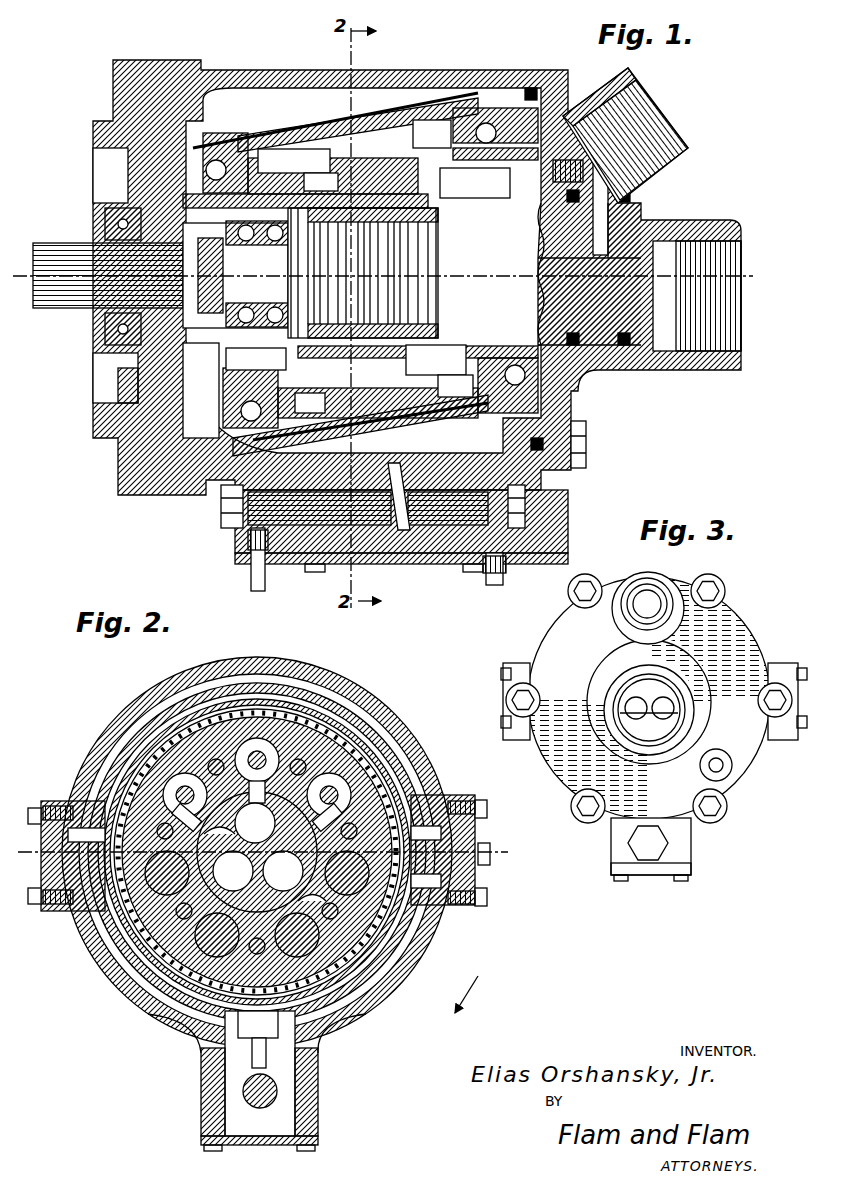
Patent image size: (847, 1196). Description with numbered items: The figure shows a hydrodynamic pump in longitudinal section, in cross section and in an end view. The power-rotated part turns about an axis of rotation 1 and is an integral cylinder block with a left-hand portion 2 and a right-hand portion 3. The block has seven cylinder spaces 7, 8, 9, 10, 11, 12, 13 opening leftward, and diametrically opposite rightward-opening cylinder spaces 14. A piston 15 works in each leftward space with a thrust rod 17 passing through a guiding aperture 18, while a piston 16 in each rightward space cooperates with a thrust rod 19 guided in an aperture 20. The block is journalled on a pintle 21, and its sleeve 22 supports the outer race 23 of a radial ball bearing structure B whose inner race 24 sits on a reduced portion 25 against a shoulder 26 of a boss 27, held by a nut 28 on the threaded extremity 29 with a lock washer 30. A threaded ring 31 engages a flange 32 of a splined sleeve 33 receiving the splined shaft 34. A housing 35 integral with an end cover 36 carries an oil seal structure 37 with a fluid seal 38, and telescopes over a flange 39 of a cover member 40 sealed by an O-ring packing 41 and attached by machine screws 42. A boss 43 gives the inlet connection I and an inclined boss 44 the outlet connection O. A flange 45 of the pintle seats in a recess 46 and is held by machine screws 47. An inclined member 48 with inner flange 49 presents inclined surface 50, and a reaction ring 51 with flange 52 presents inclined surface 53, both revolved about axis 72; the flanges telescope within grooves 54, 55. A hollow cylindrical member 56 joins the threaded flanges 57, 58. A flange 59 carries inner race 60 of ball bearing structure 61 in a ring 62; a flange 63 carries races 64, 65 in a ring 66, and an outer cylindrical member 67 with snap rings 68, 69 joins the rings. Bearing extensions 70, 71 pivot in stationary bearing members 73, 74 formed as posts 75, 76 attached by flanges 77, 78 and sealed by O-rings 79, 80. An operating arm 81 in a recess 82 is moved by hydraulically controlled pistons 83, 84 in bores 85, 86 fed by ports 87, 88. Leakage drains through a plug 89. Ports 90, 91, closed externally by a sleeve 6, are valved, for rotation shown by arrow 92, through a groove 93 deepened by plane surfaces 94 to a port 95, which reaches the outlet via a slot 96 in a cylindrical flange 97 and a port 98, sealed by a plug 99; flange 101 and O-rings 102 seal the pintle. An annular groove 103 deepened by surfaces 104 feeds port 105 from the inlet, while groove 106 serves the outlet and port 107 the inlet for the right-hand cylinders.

In FIG. 1, the axis of rotation 1 is at (472, 262).
In FIG. 2, the axis of rotation 1 is at (227, 856).
In FIG. 1, the left-hand portion of cylinder block 2 is at (306, 140).
In FIG. 2, the left-hand portion of cylinder block 2 is at (330, 718).
In FIG. 1, the right-hand portion of cylinder block 3 is at (376, 96).
In FIG. 1, the sleeve 6 is at (341, 434).
In FIG. 2, the sleeve 6 is at (380, 770).
In FIG. 1, the cylinder space 7 is at (282, 130).
In FIG. 2, the cylinder space 7 is at (310, 702).
In FIG. 2, the cylinder space 8 is at (395, 806).
In FIG. 2, the cylinder space 9 is at (420, 912).
In FIG. 2, the cylinder space 10 is at (392, 958).
In FIG. 2, the cylinder space 11 is at (178, 1012).
In FIG. 2, the cylinder space 12 is at (118, 932).
In FIG. 2, the cylinder space 13 is at (195, 780).
In FIG. 1, the cylinder space 14 is at (446, 312).
In FIG. 1, the piston 15 is at (311, 162).
In FIG. 2, the piston 15 is at (318, 950).
In FIG. 1, the piston 16 is at (429, 351).
In FIG. 1, the thrust rod 17 is at (434, 134).
In FIG. 2, the thrust rod 17 is at (254, 738).
In FIG. 1, the guiding aperture 18 is at (356, 100).
In FIG. 1, the thrust rod 19 is at (312, 388).
In FIG. 2, the thrust rod 19 is at (340, 725).
In FIG. 1, the aperture 20 is at (429, 368).
In FIG. 2, the aperture 20 is at (194, 740).
In FIG. 1, the pintle 21 is at (503, 234).
In FIG. 2, the pintle 21 is at (140, 855).
In FIG. 1, the sleeve 22 is at (210, 356).
In FIG. 1, the outer race 23 is at (241, 371).
In FIG. 1, the inner race 24 is at (241, 278).
In FIG. 1, the reduced portion 25 is at (269, 269).
In FIG. 1, the shoulder 26 is at (270, 286).
In FIG. 1, the boss 27 is at (299, 252).
In FIG. 1, the nut 28 is at (206, 336).
In FIG. 1, the threaded extremity 29 is at (96, 303).
In FIG. 1, the lock washer 30 is at (115, 216).
In FIG. 1, the threaded ring 31 is at (140, 352).
In FIG. 1, the flange 32 is at (241, 356).
In FIG. 1, the splined sleeve 33 is at (125, 228).
In FIG. 1, the splined shaft 34 is at (44, 298).
In FIG. 1, the housing 35 is at (215, 72).
In FIG. 2, the housing 35 is at (292, 662).
In FIG. 1, the end cover 36 is at (112, 415).
In FIG. 1, the oil seal structure 37 is at (118, 210).
In FIG. 1, the fluid seal 38 is at (98, 326).
In FIG. 1, the flange 39 is at (517, 80).
In FIG. 1, the cover member 40 is at (555, 92).
In FIG. 3, the cover member 40 is at (542, 630).
In FIG. 1, the O-ring packing 41 is at (542, 76).
In FIG. 1, the machine screws 42 is at (580, 437).
In FIG. 3, the machine screws 42 is at (705, 582).
In FIG. 1, the internally threaded boss 43 is at (700, 218).
In FIG. 3, the internally threaded boss 43 is at (672, 676).
In FIG. 1, the inclined internally threaded boss 44 is at (622, 62).
In FIG. 3, the inclined internally threaded boss 44 is at (606, 609).
In FIG. 1, the flange 45 is at (604, 362).
In FIG. 1, the recess 46 is at (565, 394).
In FIG. 1, the machine screws 47 is at (542, 166).
In FIG. 1, the inclined member 48 is at (238, 406).
In FIG. 1, the inner flange 49 is at (268, 186).
In FIG. 1, the inclined surface 50 is at (282, 186).
In FIG. 1, the reaction ring 51 is at (455, 184).
In FIG. 1, the flange 52 is at (453, 386).
In FIG. 1, the inclined surface 53 is at (432, 341).
In FIG. 1, the groove 54 is at (288, 346).
In FIG. 1, the groove 55 is at (440, 192).
In FIG. 1, the hollow cylindrical member 56 is at (320, 98).
In FIG. 2, the hollow cylindrical member 56 is at (272, 720).
In FIG. 1, the threaded flange 57 is at (258, 130).
In FIG. 1, the threaded flange 58 is at (422, 92).
In FIG. 1, the flange 59 is at (212, 376).
In FIG. 1, the inner race 60 is at (226, 392).
In FIG. 1, the ball bearing structure 61 is at (188, 143).
In FIG. 1, the ring 62 is at (200, 148).
In FIG. 1, the flange 63 is at (485, 184).
In FIG. 1, the inner race 64 is at (488, 322).
In FIG. 1, the outer race 65 is at (480, 125).
In FIG. 1, the ring 66 is at (491, 96).
In FIG. 1, the outer cylindrical member 67 is at (406, 88).
In FIG. 2, the outer cylindrical member 67 is at (226, 735).
In FIG. 1, the snap ring 68 is at (232, 142).
In FIG. 1, the snap ring 69 is at (476, 100).
In FIG. 2, the bearing extension 70 is at (70, 796).
In FIG. 2, the bearing extension 71 is at (440, 793).
In FIG. 1, the axis 72 is at (402, 245).
In FIG. 2, the axis 72 is at (483, 846).
In FIG. 2, the stationary bearing member 73 is at (102, 918).
In FIG. 2, the stationary bearing member 74 is at (440, 898).
In FIG. 2, the post 75 is at (28, 892).
In FIG. 2, the post 76 is at (466, 868).
In FIG. 2, the flange 77 is at (25, 800).
In FIG. 2, the flange 78 is at (462, 900).
In FIG. 2, the O-ring 79 is at (98, 908).
In FIG. 2, the O-ring 80 is at (460, 815).
In FIG. 1, the operating arm 81 is at (382, 470).
In FIG. 2, the operating arm 81 is at (222, 1050).
In FIG. 1, the recess 82 is at (390, 550).
In FIG. 2, the recess 82 is at (246, 1132).
In FIG. 1, the hydraulically controlled piston 83 is at (313, 505).
In FIG. 2, the hydraulically controlled piston 83 is at (272, 1082).
In FIG. 1, the hydraulically controlled piston 84 is at (443, 505).
In FIG. 1, the bore 85 is at (226, 514).
In FIG. 1, the bore 86 is at (517, 490).
In FIG. 1, the port 87 is at (242, 540).
In FIG. 1, the port 88 is at (495, 531).
In FIG. 3, the plug 89 is at (716, 757).
In FIG. 1, the port 90 is at (402, 212).
In FIG. 2, the port 90 is at (300, 690).
In FIG. 1, the port 91 is at (402, 297).
In FIG. 2, the arrow 92 is at (468, 978).
In FIG. 1, the groove 93 is at (402, 280).
In FIG. 2, the groove 93 is at (404, 935).
In FIG. 2, the plane surfaces 94 is at (270, 832).
In FIG. 1, the port 95 is at (565, 228).
In FIG. 2, the port 95 is at (255, 823).
In FIG. 1, the slot 96 is at (586, 236).
In FIG. 1, the cylindrical flange 97 is at (615, 160).
In FIG. 1, the port 98 is at (630, 135).
In FIG. 1, the plug 99 is at (616, 216).
In FIG. 1, the flange 101 is at (642, 362).
In FIG. 1, the O-rings 102 is at (622, 188).
In FIG. 1, the annular groove 103 is at (402, 228).
In FIG. 2, the annular groove 103 is at (210, 758).
In FIG. 2, the surfaces 104 is at (222, 848).
In FIG. 2, the port 105 is at (234, 872).
In FIG. 3, the port 105 is at (666, 702).
In FIG. 1, the groove 106 is at (402, 262).
In FIG. 2, the port 107 is at (283, 872).
In FIG. 3, the port 107 is at (602, 692).
In FIG. 1, the outlet connection O is at (642, 92).
In FIG. 3, the outlet connection O is at (657, 568).
In FIG. 1, the inlet connection I is at (735, 258).
In FIG. 3, the inlet connection I is at (592, 702).
In FIG. 1, the radial ball bearing structure B is at (195, 188).